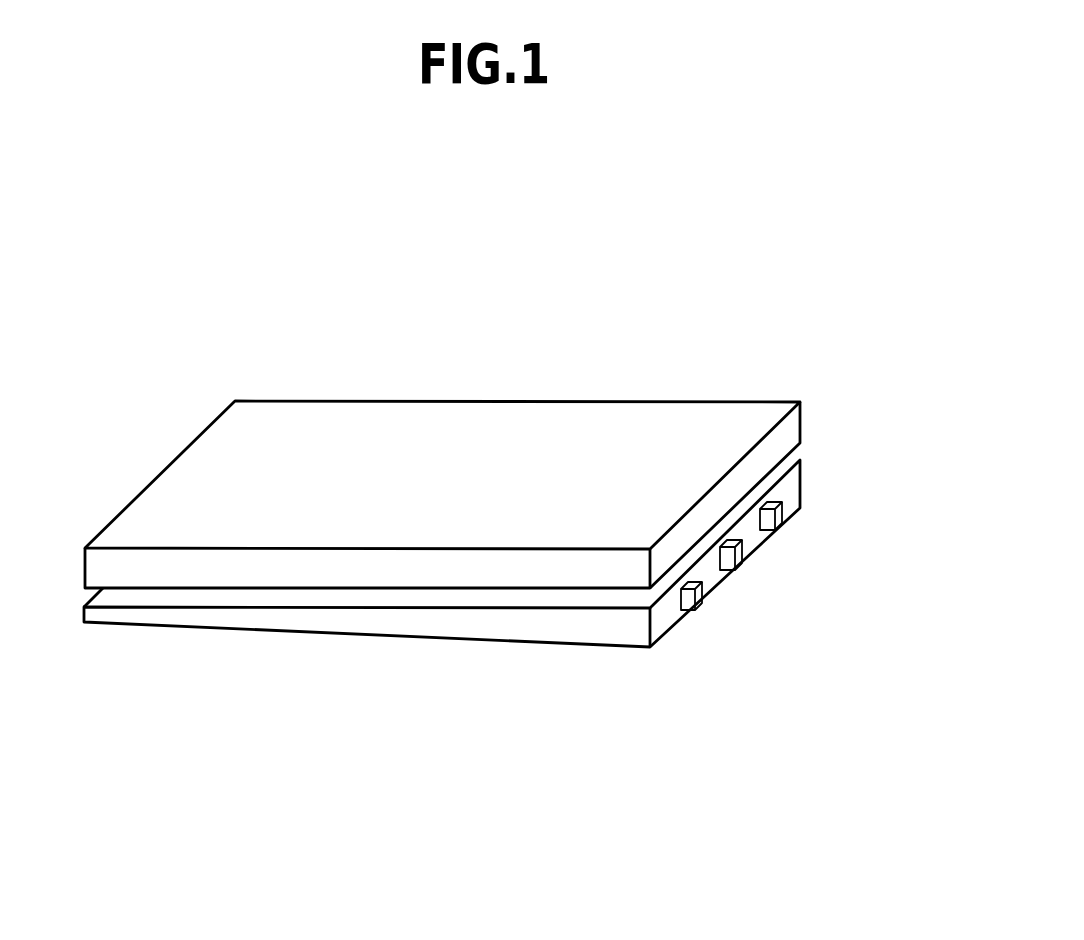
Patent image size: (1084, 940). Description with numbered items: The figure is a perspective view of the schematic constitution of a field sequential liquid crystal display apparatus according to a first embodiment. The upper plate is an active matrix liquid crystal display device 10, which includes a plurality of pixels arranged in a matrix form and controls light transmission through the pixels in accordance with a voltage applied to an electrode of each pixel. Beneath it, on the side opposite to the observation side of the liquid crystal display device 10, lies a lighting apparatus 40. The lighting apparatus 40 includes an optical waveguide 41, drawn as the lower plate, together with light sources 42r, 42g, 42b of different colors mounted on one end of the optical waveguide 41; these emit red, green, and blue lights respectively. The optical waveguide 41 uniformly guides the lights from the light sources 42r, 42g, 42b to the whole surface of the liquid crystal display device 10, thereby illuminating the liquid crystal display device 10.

The active matrix liquid crystal display device 10 is at (710, 444).
The lighting apparatus 40 is at (442, 613).
The optical waveguide 41 is at (460, 627).
The light source 42r is at (700, 602).
The light source 42g is at (740, 562).
The light source 42b is at (780, 522).